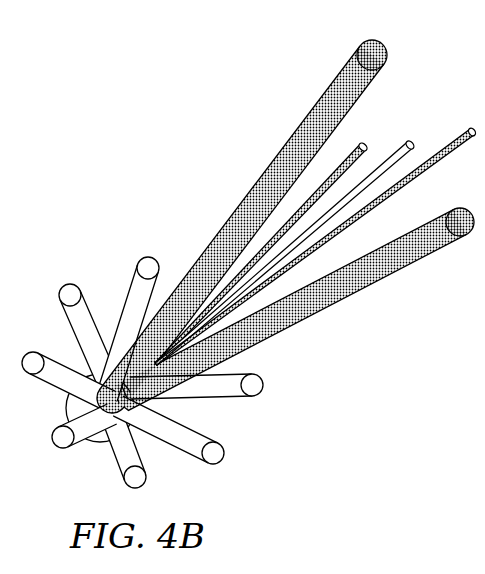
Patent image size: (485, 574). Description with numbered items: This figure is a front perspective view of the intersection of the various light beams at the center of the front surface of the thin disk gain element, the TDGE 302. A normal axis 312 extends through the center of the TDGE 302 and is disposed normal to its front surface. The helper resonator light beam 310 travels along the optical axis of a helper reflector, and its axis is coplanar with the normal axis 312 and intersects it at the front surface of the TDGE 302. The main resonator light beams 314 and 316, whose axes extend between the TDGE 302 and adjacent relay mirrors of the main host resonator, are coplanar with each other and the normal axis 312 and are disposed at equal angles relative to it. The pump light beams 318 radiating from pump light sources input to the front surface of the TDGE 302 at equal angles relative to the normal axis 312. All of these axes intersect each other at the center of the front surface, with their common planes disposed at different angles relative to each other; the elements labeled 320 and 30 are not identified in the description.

The TDGE 302 is at (73, 403).
The helper resonator light beam 310 is at (352, 152).
The normal axis 312 is at (400, 147).
The main resonator light beam 314 is at (301, 124).
The main resonator light beam 316 is at (372, 272).
The pump light beams 318 is at (68, 291).
The hub rod 320 is at (219, 459).
The thin stippled rod 30 is at (453, 157).